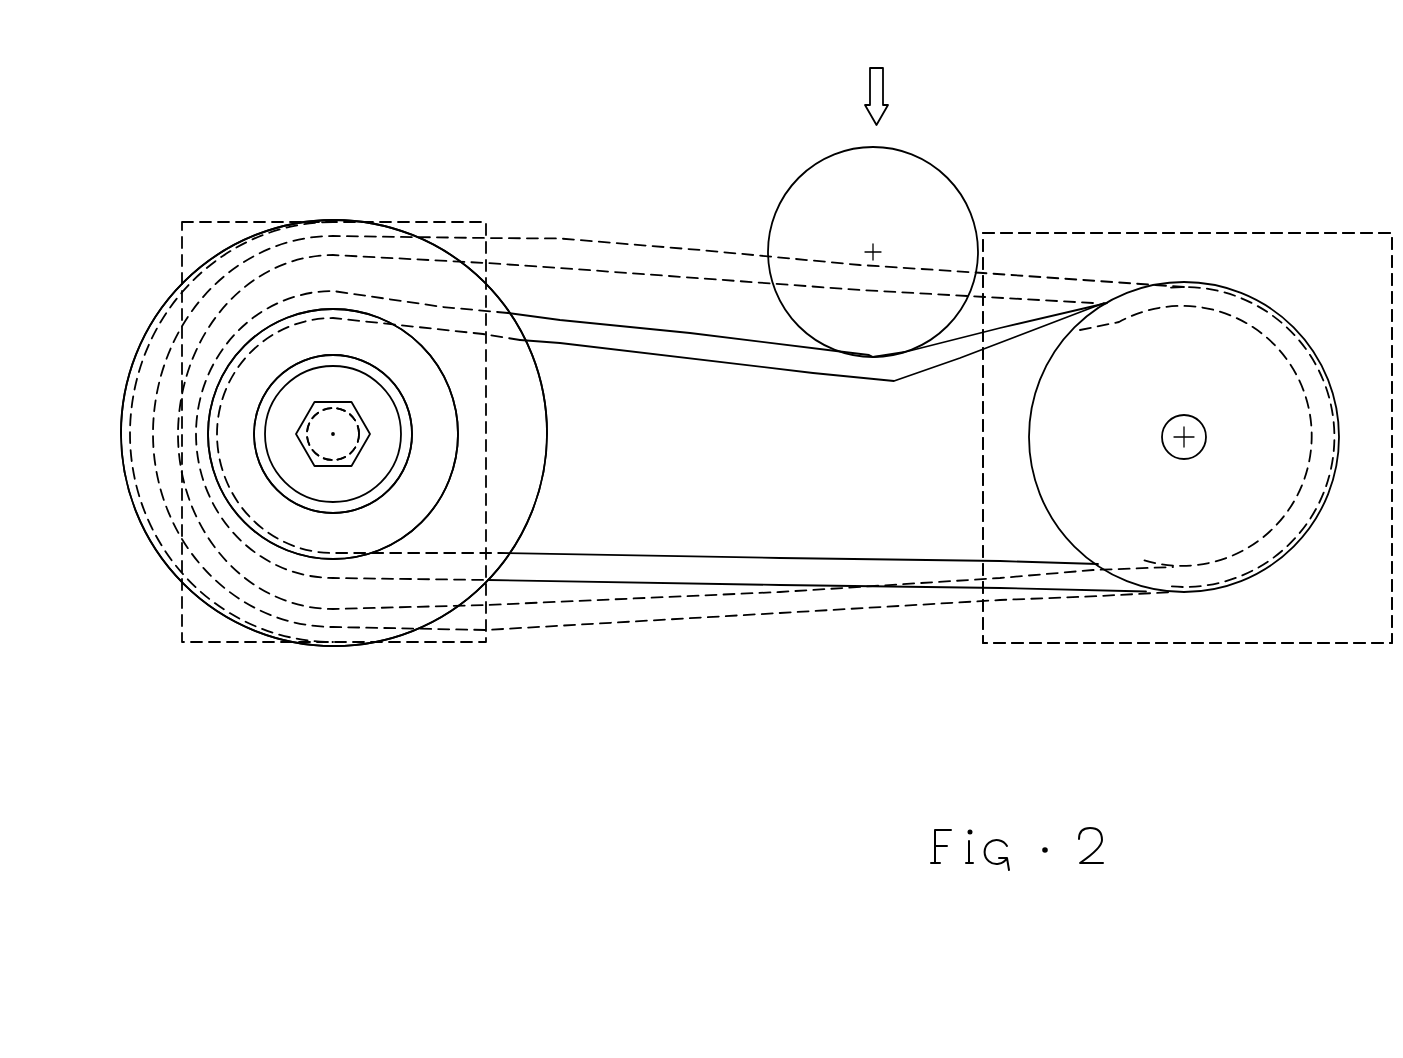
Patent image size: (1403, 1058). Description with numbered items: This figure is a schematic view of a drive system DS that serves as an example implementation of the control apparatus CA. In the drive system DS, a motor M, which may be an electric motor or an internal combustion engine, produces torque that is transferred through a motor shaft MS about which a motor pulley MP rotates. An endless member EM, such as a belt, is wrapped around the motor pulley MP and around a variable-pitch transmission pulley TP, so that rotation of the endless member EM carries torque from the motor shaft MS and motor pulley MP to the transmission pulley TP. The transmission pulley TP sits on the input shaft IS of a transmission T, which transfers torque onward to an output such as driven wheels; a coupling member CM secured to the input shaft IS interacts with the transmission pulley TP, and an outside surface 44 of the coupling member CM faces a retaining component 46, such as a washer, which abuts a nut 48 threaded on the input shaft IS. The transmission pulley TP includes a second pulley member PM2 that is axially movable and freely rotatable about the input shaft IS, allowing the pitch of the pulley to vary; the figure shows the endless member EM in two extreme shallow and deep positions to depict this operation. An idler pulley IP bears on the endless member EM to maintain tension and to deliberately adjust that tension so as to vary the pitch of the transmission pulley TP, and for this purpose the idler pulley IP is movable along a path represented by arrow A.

The nut 48 is at (303, 418).
The retaining component 46 is at (387, 373).
The outside surface 44 is at (432, 418).
The control apparatus CA is at (404, 168).
The endless member EM is at (690, 333).
The arrow A is at (871, 86).
The idler pulley IP is at (931, 166).
The drive system DS is at (1120, 176).
The motor M is at (1223, 232).
The coupling member CM is at (457, 450).
The input shaft IS is at (360, 440).
The second pulley member PM2 is at (498, 562).
The transmission pulley TP is at (289, 678).
The transmission T is at (420, 663).
The motor pulley MP is at (1062, 536).
The motor shaft MS is at (1183, 460).